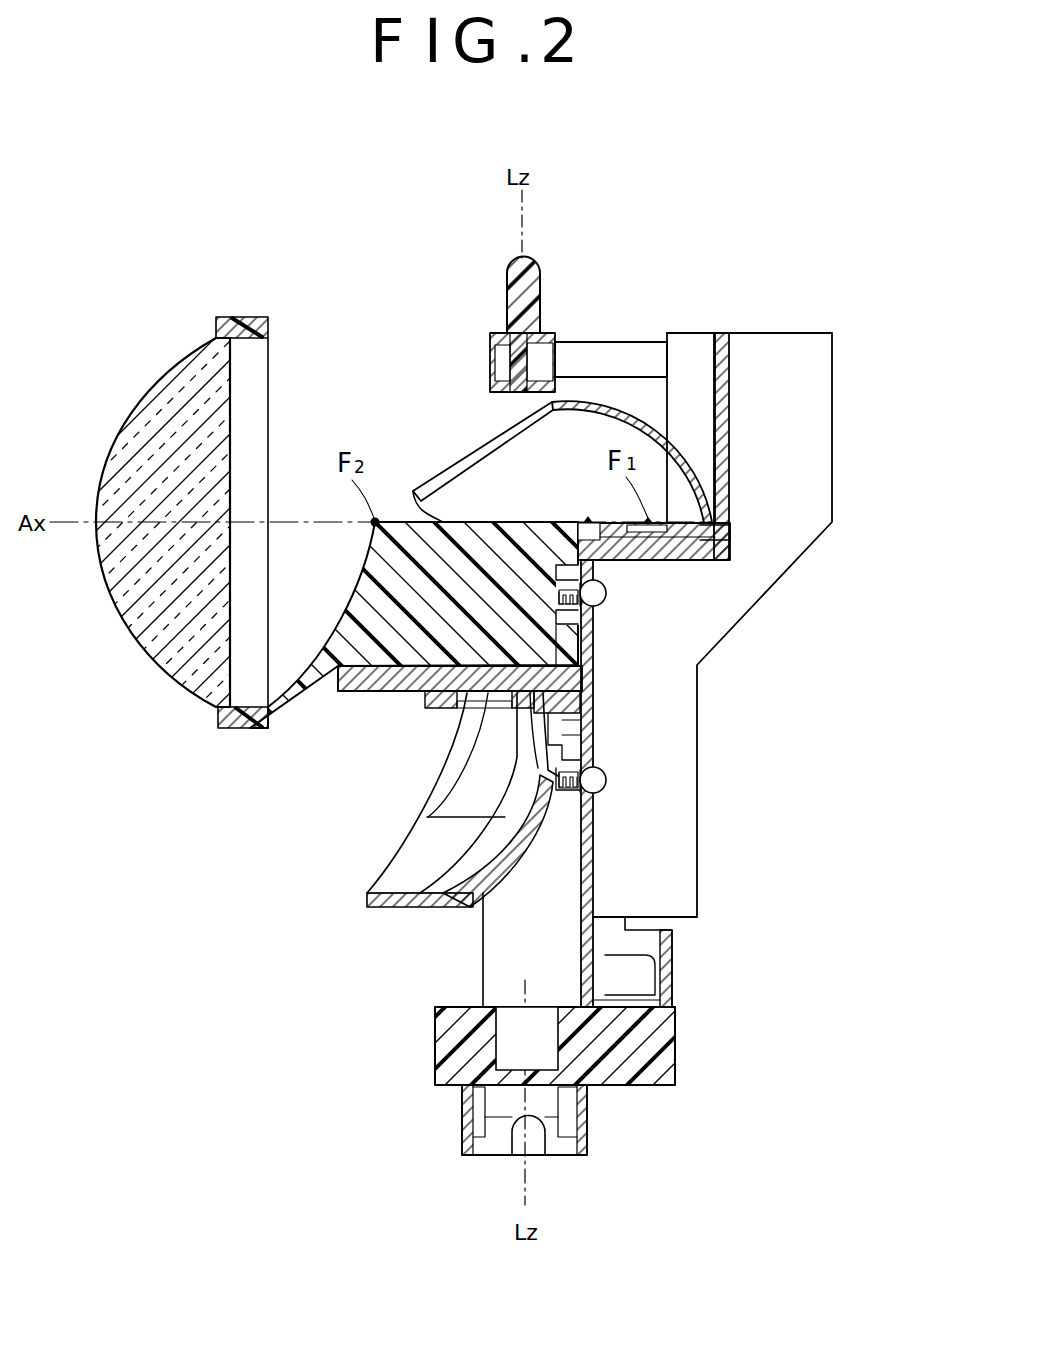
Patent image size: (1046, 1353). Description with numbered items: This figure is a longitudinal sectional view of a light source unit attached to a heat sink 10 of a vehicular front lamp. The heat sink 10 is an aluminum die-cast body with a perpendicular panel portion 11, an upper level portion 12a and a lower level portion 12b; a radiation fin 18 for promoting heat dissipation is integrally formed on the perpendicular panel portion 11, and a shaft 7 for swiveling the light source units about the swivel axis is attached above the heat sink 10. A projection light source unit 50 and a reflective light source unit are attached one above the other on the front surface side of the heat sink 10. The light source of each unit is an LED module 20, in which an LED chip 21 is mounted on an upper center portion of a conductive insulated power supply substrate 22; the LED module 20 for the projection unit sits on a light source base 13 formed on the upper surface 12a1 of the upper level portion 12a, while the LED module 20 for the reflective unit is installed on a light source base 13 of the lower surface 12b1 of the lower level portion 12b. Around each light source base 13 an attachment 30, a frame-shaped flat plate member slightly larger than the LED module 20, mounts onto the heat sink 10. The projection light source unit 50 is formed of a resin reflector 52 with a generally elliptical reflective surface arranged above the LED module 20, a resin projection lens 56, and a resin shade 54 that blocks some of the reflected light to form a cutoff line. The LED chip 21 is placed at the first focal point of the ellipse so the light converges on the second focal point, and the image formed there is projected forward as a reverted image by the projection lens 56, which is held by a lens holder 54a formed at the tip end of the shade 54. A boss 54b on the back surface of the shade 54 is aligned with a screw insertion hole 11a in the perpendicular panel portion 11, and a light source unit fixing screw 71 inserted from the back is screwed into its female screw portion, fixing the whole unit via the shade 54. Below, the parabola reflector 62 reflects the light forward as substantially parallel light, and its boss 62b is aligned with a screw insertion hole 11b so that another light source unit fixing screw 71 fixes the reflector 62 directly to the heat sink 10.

The shaft 7 is at (540, 262).
The heat sink 10 is at (700, 746).
The perpendicular panel portion 11 is at (728, 473).
The screw insertion hole 11a is at (607, 591).
The screw insertion hole 11b is at (607, 776).
The upper level portion 12a is at (710, 553).
The upper surface 12a1 is at (713, 525).
The lower level portion 12b is at (395, 690).
The lower surface 12b1 is at (350, 694).
The light source base 13 is at (437, 705).
The radiation fin 18 is at (806, 333).
The LED module 20 is at (709, 270).
The LED chip 21 is at (652, 520).
The power supply substrate 22 is at (692, 525).
The attachment 30 is at (690, 492).
The projection light source unit 50 is at (406, 203).
The reflector 52 is at (455, 495).
The shade 54 is at (400, 528).
The lens holder 54a is at (245, 322).
The boss 54b is at (596, 628).
The projection lens 56 is at (193, 376).
The reflector 62 is at (405, 906).
The boss 62b is at (600, 801).
The light source unit fixing screw 71 is at (604, 594).